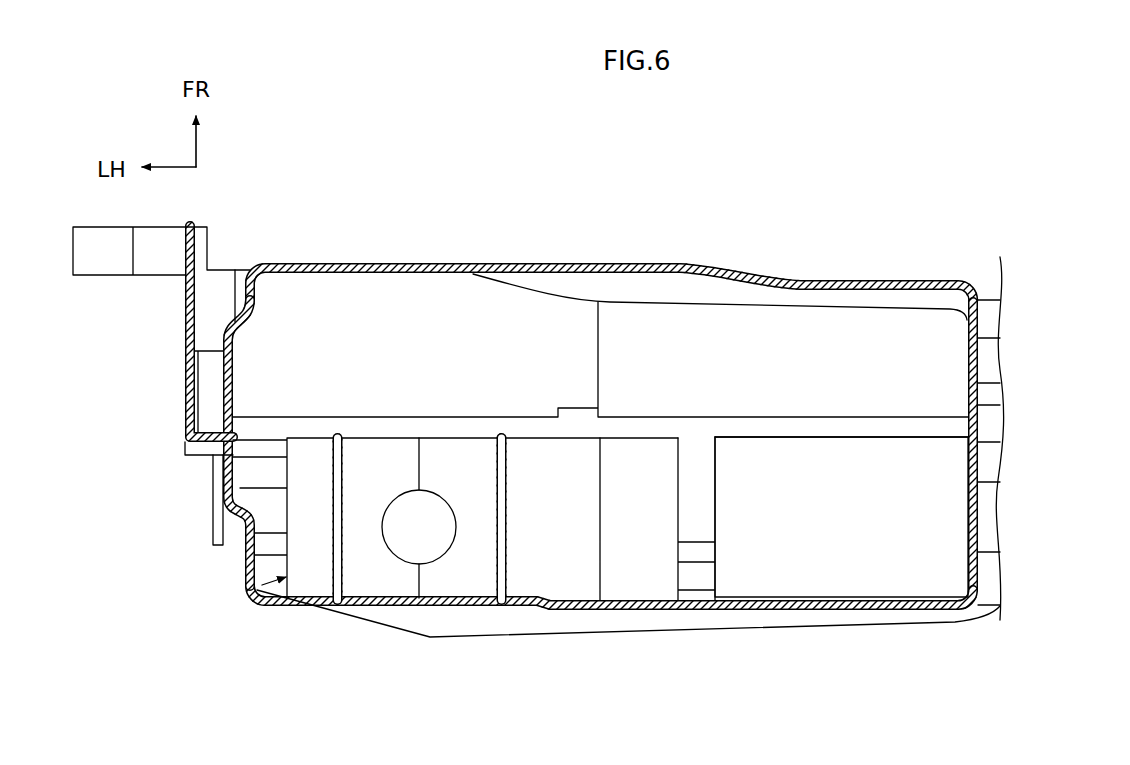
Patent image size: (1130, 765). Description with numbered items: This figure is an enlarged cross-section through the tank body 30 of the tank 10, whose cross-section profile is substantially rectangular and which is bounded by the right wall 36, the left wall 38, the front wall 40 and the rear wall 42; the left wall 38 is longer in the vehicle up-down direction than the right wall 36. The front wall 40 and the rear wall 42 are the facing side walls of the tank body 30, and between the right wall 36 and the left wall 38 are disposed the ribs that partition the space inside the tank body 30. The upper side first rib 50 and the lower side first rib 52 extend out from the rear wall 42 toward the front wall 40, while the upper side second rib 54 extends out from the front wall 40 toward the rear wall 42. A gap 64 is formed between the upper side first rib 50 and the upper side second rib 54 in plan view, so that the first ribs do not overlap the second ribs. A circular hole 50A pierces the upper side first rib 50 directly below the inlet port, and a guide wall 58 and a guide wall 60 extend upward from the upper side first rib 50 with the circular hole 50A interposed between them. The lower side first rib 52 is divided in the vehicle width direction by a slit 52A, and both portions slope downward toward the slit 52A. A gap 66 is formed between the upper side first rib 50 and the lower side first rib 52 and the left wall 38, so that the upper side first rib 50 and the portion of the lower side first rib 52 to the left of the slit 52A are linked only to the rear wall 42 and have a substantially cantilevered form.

The battery unit 10 is at (597, 417).
The tank body 30 is at (374, 258).
The right wall 36 is at (983, 423).
The left wall 38 is at (227, 450).
The front wall 40 is at (596, 262).
The rear wall 42 is at (572, 610).
The upper side first rib 50 is at (255, 596).
The circular hole 50A is at (396, 552).
The lower side first rib 52 is at (710, 573).
The slit 52A is at (710, 485).
The upper side second rib 54 is at (720, 300).
The guide wall 58 is at (336, 562).
The guide wall 60 is at (499, 566).
The gap 64 is at (520, 428).
The gap 66 is at (228, 533).